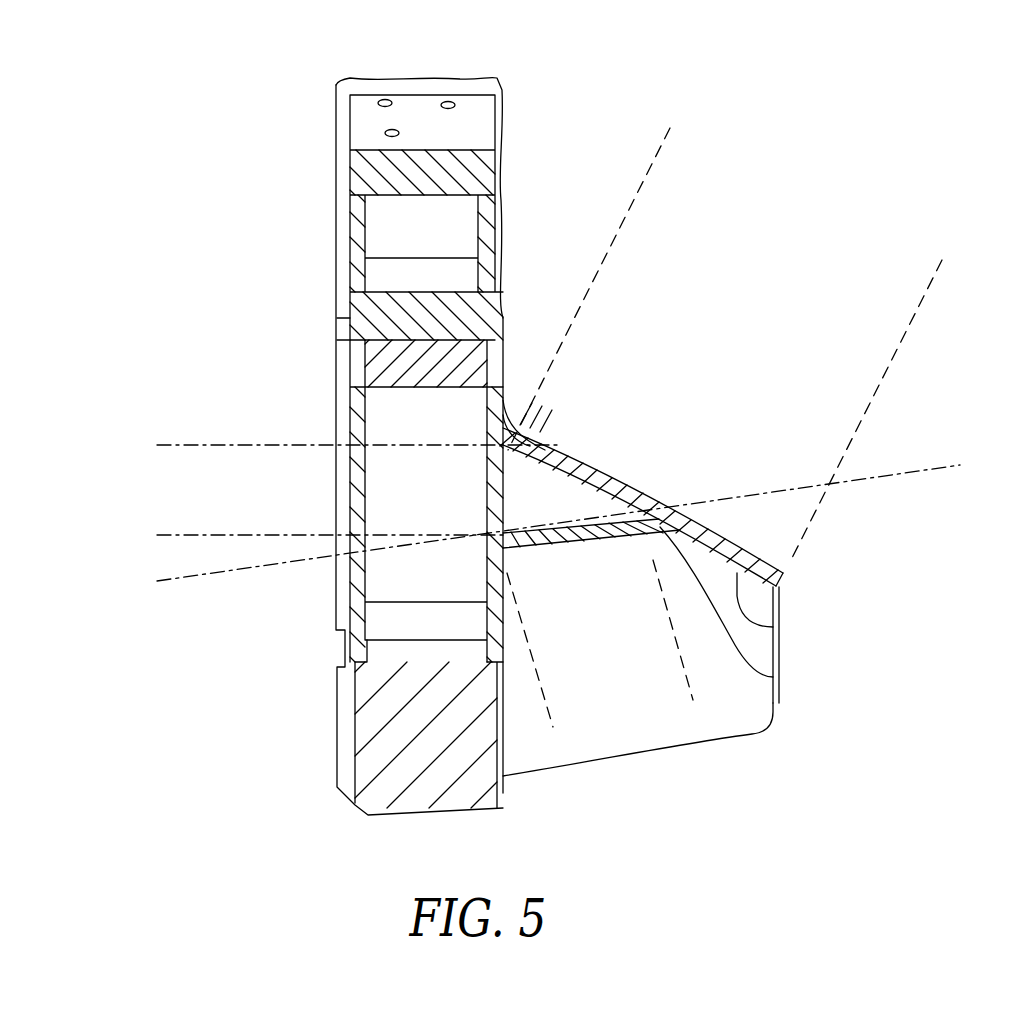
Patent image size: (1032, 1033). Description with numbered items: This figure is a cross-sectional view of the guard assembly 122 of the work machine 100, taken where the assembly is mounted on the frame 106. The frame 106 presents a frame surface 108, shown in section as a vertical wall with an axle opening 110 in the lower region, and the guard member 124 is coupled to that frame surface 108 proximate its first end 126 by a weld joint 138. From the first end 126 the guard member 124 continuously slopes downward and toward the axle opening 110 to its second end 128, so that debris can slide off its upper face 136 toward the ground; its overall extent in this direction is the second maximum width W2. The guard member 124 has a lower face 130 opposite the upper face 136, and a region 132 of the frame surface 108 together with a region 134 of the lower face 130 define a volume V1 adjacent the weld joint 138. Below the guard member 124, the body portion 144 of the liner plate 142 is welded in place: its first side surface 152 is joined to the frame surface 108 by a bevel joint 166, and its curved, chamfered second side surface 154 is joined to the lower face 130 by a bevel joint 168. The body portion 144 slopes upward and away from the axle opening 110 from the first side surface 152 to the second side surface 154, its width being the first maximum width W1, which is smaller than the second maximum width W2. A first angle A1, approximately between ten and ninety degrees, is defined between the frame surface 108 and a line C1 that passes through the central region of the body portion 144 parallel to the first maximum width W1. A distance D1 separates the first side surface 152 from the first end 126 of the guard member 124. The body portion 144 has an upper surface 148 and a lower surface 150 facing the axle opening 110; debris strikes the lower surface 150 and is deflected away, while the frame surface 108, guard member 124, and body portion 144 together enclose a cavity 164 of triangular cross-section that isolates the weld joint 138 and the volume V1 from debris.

The work machine 100 is at (920, 90).
The frame 106 is at (323, 268).
The frame surface 108 is at (511, 414).
The axle opening 110 is at (390, 717).
The guard assembly 122 is at (817, 548).
The guard member 124 is at (772, 523).
The first end 126 is at (506, 396).
The second end 128 is at (792, 575).
The lower face 130 is at (782, 628).
The region of the frame surface 132 is at (512, 463).
The region of the lower face 134 is at (557, 482).
The upper face 136 is at (740, 547).
The weld joint 138 is at (509, 436).
The liner plate 142 is at (590, 462).
The body portion 144 is at (597, 550).
The upper surface 148 is at (635, 487).
The lower surface 150 is at (649, 525).
The first side surface 152 is at (505, 533).
The second side surface 154 is at (775, 678).
The cavity 164 is at (515, 482).
The bevel joint 166 is at (543, 518).
The bevel joint 168 is at (710, 527).
The first angle A1 is at (580, 486).
The line C1 is at (960, 462).
The distance D1 is at (187, 449).
The volume V1 is at (500, 440).
The first maximum width W1 is at (553, 713).
The second maximum width W2 is at (660, 152).